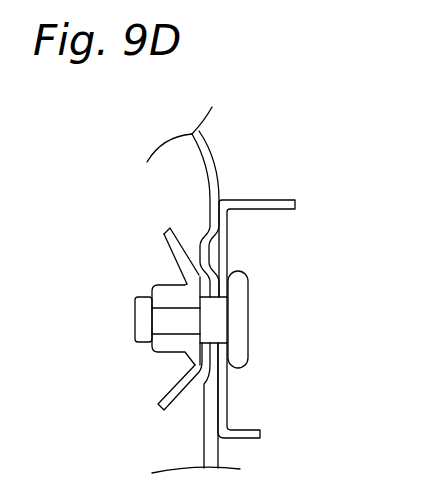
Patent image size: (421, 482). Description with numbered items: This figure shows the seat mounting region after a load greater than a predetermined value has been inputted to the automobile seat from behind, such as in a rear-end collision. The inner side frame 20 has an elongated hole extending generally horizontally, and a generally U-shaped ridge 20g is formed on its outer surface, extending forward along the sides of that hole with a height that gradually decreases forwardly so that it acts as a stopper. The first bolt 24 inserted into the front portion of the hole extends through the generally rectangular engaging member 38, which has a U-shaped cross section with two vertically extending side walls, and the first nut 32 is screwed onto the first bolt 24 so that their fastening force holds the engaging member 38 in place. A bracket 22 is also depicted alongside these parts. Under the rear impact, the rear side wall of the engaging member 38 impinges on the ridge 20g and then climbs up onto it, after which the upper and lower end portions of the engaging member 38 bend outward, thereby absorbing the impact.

The inner side frame 20 is at (216, 450).
The ridge 20g is at (171, 416).
The bracket 22 is at (280, 209).
The first bolt 24 is at (248, 327).
The first nut 32 is at (170, 352).
The engaging member 38 is at (162, 240).